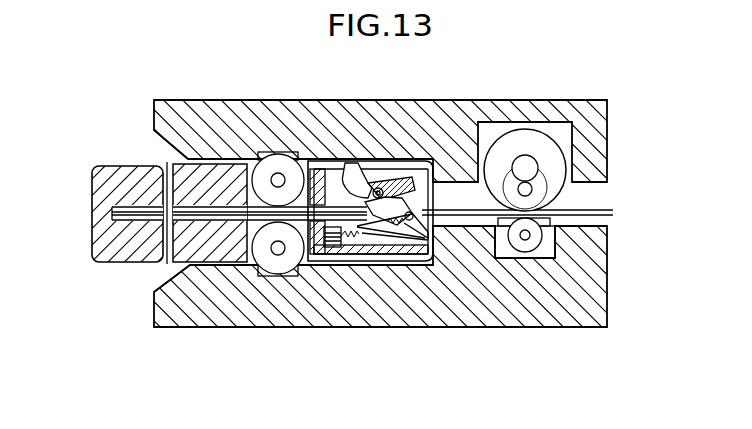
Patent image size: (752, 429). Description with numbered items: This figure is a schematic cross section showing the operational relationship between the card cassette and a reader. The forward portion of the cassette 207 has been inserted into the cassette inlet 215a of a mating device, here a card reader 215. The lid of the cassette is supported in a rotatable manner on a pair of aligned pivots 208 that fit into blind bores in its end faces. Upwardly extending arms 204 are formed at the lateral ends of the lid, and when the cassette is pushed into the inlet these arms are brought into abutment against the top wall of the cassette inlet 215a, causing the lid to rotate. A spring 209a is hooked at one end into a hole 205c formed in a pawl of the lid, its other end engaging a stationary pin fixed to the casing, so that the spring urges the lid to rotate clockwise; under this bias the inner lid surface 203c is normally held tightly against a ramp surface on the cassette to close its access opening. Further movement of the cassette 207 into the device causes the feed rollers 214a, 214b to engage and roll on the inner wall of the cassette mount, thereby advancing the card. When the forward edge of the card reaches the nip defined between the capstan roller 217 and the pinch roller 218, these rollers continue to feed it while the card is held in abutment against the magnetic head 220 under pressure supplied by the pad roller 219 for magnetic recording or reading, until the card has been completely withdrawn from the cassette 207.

The cassette 207 is at (125, 158).
The feed roller 214a is at (278, 155).
The feed roller 214b is at (276, 274).
The arms 204 is at (345, 162).
The pivots 208 is at (380, 187).
The capstan roller 217 is at (532, 138).
The inner lid surface 203c is at (414, 193).
The pad roller 219 is at (553, 212).
The hole 205c is at (418, 229).
The pinch roller 218 is at (500, 227).
The magnetic head 220 is at (548, 259).
The spring 209a is at (352, 236).
The cassette inlet 215a is at (163, 275).
The card reader 215 is at (400, 333).